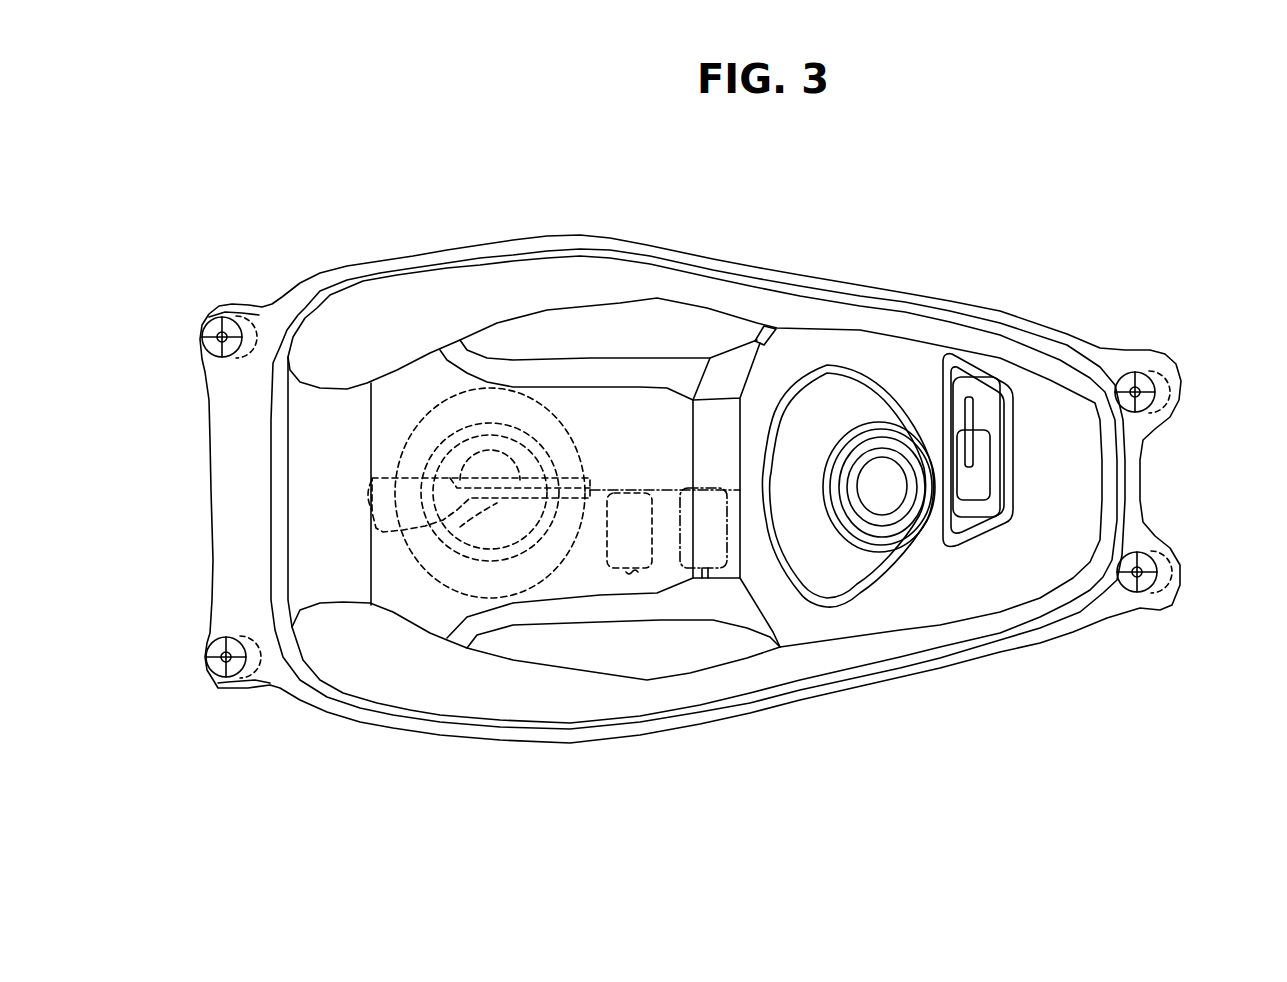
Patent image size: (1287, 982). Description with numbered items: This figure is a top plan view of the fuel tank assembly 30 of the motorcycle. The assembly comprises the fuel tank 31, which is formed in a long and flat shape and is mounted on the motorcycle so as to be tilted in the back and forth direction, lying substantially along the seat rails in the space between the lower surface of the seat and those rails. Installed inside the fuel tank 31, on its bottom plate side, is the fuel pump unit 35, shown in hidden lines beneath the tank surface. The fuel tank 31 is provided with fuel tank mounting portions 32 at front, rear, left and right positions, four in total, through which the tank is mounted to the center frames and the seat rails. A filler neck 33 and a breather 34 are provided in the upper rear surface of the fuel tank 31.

The fuel tank assembly 30 is at (644, 165).
The fuel tank 31 is at (665, 256).
The fuel tank mounting portions 32 is at (209, 317).
The filler neck 33 is at (873, 472).
The breather 34 is at (982, 437).
The fuel pump unit 35 is at (493, 418).